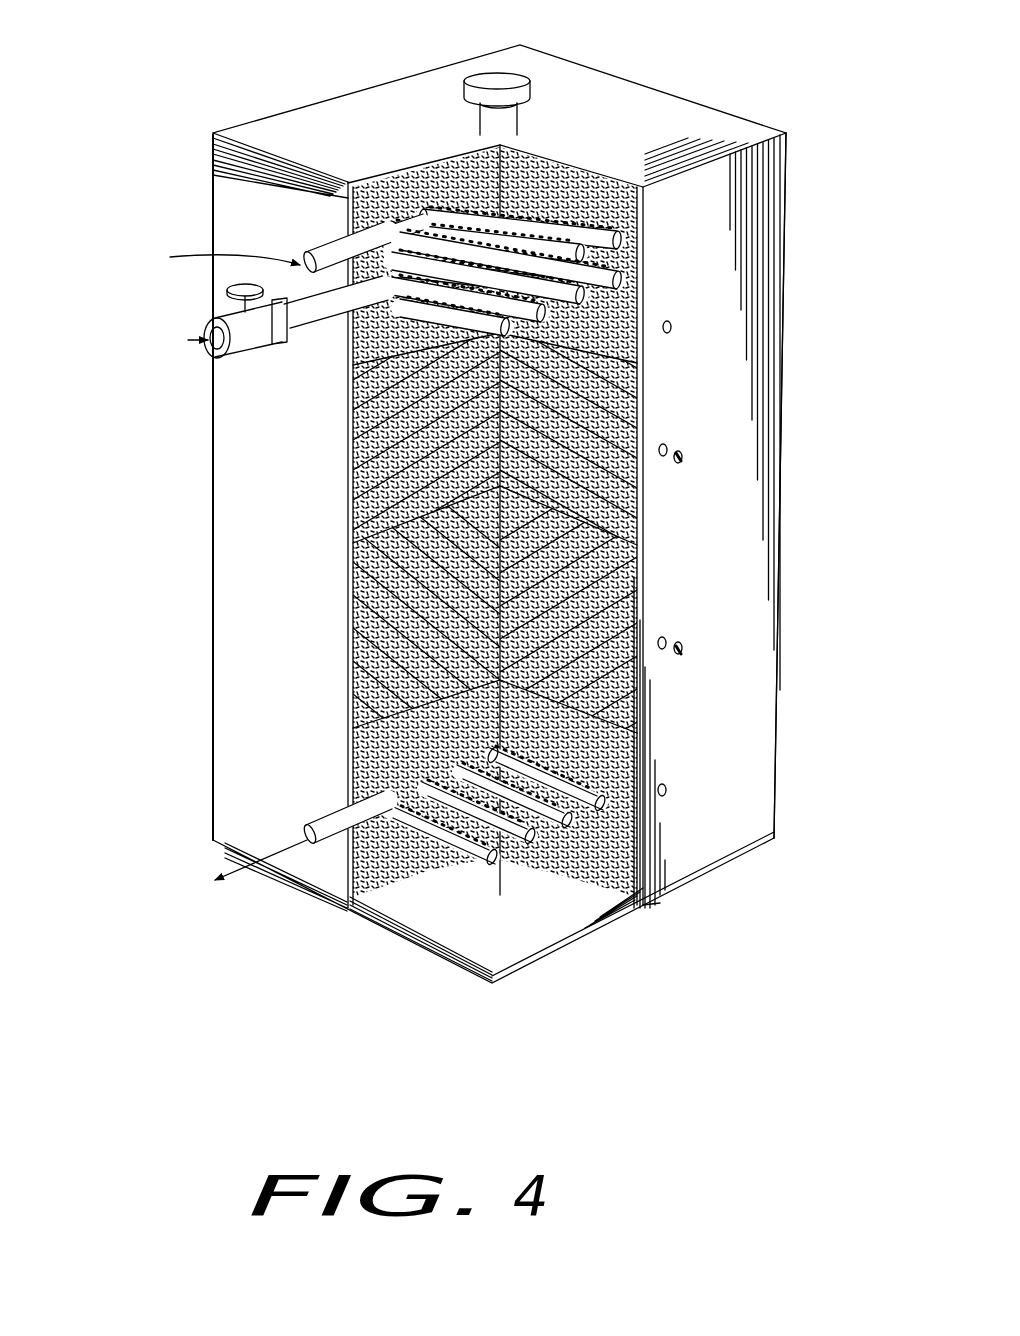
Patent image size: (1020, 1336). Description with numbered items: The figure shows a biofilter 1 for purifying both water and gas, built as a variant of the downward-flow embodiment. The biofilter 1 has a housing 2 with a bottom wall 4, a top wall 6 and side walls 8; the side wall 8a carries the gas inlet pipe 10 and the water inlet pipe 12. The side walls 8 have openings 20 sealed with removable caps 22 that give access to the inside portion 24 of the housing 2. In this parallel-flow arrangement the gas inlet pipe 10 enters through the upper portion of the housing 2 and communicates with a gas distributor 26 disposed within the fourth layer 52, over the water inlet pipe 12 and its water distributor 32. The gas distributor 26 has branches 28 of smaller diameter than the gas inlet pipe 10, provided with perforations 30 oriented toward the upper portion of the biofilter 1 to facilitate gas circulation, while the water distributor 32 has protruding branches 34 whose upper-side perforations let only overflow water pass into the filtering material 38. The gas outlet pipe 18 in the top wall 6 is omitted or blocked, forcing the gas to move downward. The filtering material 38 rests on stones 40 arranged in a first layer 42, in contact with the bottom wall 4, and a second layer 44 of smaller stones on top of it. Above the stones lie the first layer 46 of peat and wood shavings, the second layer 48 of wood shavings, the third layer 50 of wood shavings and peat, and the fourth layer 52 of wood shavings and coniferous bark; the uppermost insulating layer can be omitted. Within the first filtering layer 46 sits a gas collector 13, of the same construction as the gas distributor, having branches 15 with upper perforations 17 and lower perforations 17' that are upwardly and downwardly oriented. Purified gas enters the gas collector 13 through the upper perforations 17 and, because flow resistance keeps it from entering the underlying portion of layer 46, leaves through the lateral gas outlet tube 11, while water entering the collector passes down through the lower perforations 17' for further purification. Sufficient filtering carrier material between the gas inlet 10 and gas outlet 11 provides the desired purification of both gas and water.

The biofilter 1 is at (790, 105).
The housing 2 is at (665, 95).
The bottom wall 4 is at (548, 958).
The top wall 6 is at (575, 70).
The side walls 8 is at (215, 540).
The side wall 8a is at (222, 593).
The gas inlet pipe 10 is at (320, 245).
The lateral gas outlet tube 11 is at (330, 823).
The water inlet pipe 12 is at (305, 312).
The gas collector 13 is at (385, 785).
The branches 15 is at (553, 843).
The upper perforations 17 is at (589, 768).
The lower perforations 17' is at (459, 855).
The gas outlet pipe 18 is at (473, 123).
The openings 20 is at (668, 450).
The removable caps 22 is at (685, 458).
The inside portion 24 is at (657, 900).
The gas distributor 26 is at (437, 230).
The gas distributor branches 28 is at (583, 253).
The perforations 30 is at (563, 210).
The water distributor 32 is at (387, 263).
The branches 34 is at (395, 318).
The filtering material 38 is at (375, 437).
The stones 40 is at (337, 878).
The first layer of stones 42 is at (607, 893).
The second layer of stones 44 is at (630, 875).
The first layer of filtering material 46 is at (662, 790).
The second layer of filtering material 48 is at (643, 590).
The third layer of filtering material 50 is at (597, 417).
The fourth layer of filtering material 52 is at (637, 327).